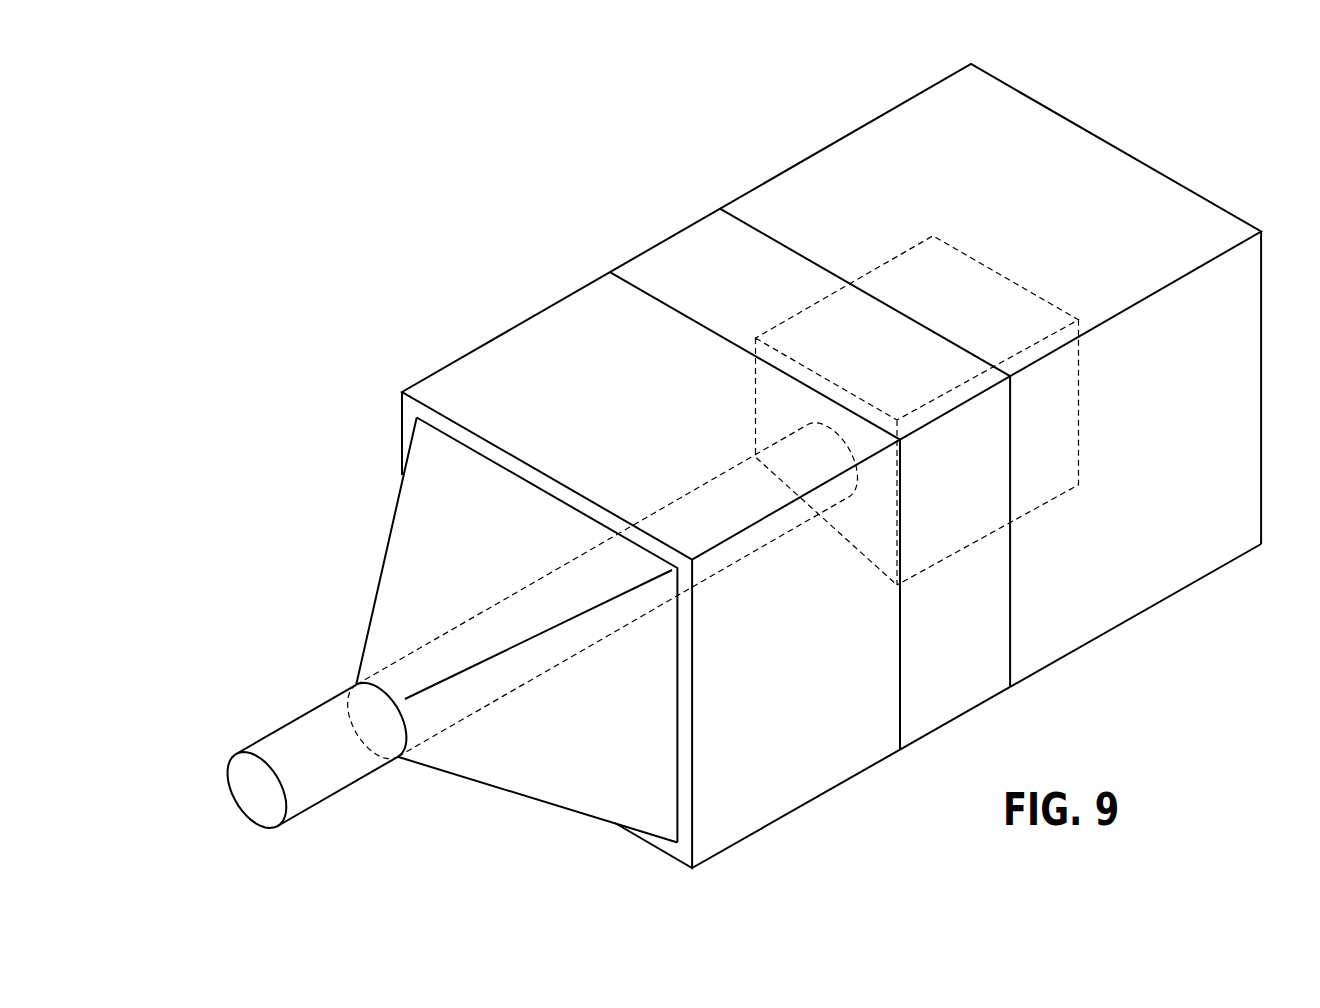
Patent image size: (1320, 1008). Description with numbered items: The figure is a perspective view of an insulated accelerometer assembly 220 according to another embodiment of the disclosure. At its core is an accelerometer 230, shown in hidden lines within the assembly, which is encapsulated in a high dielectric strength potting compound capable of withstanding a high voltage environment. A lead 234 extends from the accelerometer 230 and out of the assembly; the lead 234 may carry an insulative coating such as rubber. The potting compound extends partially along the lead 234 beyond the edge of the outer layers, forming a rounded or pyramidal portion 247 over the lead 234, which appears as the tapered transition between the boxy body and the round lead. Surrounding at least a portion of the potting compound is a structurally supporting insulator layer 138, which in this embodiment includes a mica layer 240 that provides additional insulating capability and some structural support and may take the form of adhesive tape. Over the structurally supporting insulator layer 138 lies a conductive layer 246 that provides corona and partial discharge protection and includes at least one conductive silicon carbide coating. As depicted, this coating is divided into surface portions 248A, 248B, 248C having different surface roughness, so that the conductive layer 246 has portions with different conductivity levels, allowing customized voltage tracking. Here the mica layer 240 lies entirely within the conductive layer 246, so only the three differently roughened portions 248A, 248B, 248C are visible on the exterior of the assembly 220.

The insulated accelerometer assembly 220 is at (493, 306).
The conductive layer 246 is at (865, 123).
The accelerometer 230 is at (908, 273).
The surface portion 248A is at (775, 777).
The surface portion 248B is at (695, 258).
The surface portion 248C is at (1130, 202).
The rounded or pyramidal portion 247 is at (347, 577).
The lead 234 is at (227, 777).
The structurally supporting insulator layer 138 is at (585, 549).
The mica layer 240 is at (505, 413).